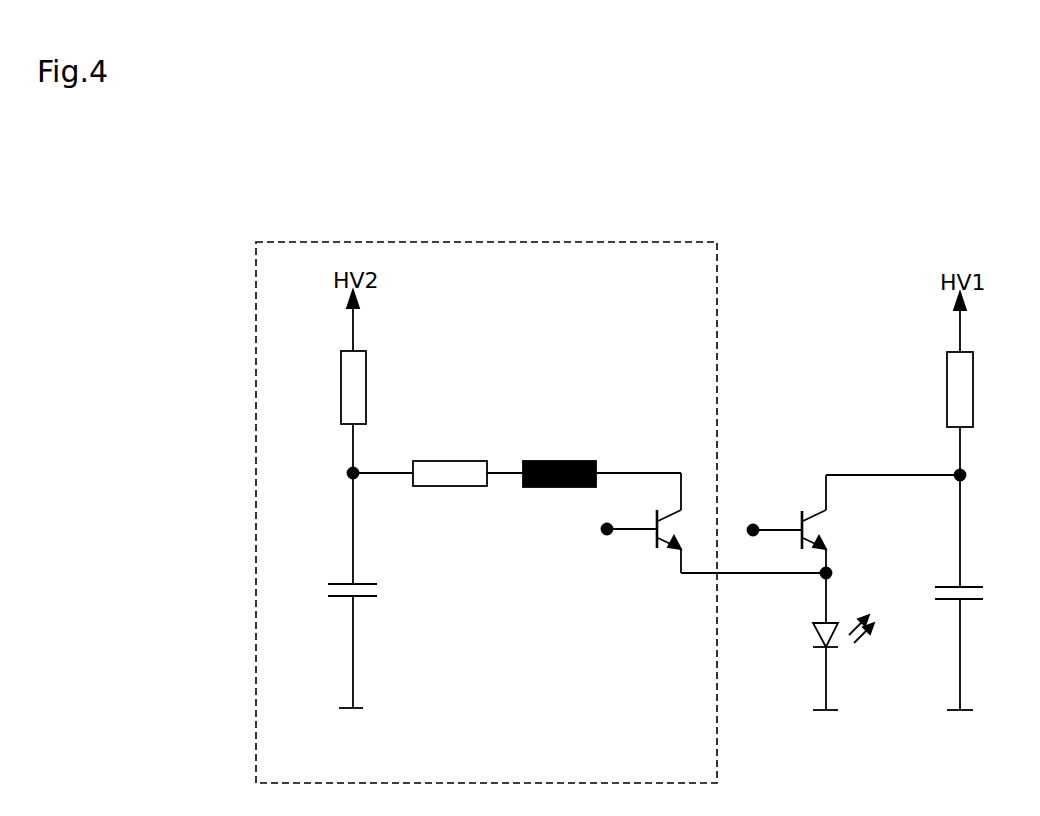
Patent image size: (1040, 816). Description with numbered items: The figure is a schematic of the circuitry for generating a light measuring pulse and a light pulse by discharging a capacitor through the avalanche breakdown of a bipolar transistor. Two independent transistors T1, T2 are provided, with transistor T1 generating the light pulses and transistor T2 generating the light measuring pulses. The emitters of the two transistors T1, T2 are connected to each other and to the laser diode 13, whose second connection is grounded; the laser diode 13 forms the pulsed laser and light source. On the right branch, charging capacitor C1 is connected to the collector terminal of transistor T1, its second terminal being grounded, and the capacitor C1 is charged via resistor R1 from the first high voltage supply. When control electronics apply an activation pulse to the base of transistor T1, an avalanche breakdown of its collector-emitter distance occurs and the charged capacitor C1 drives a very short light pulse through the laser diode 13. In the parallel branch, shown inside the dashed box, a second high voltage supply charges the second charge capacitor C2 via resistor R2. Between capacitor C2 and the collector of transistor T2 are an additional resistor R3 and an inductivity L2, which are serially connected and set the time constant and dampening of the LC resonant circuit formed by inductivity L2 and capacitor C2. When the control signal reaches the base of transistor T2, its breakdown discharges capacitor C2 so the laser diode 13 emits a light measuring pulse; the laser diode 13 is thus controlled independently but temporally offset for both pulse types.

The laser diode 13 is at (804, 661).
The resistor R1 is at (983, 389).
The resistor R2 is at (328, 387).
The additional resistor R3 is at (450, 457).
The charging capacitor C1 is at (982, 588).
The second charge capacitor C2 is at (330, 585).
The inductivity L2 is at (559, 458).
The transistor T1 is at (784, 517).
The transistor T2 is at (634, 544).